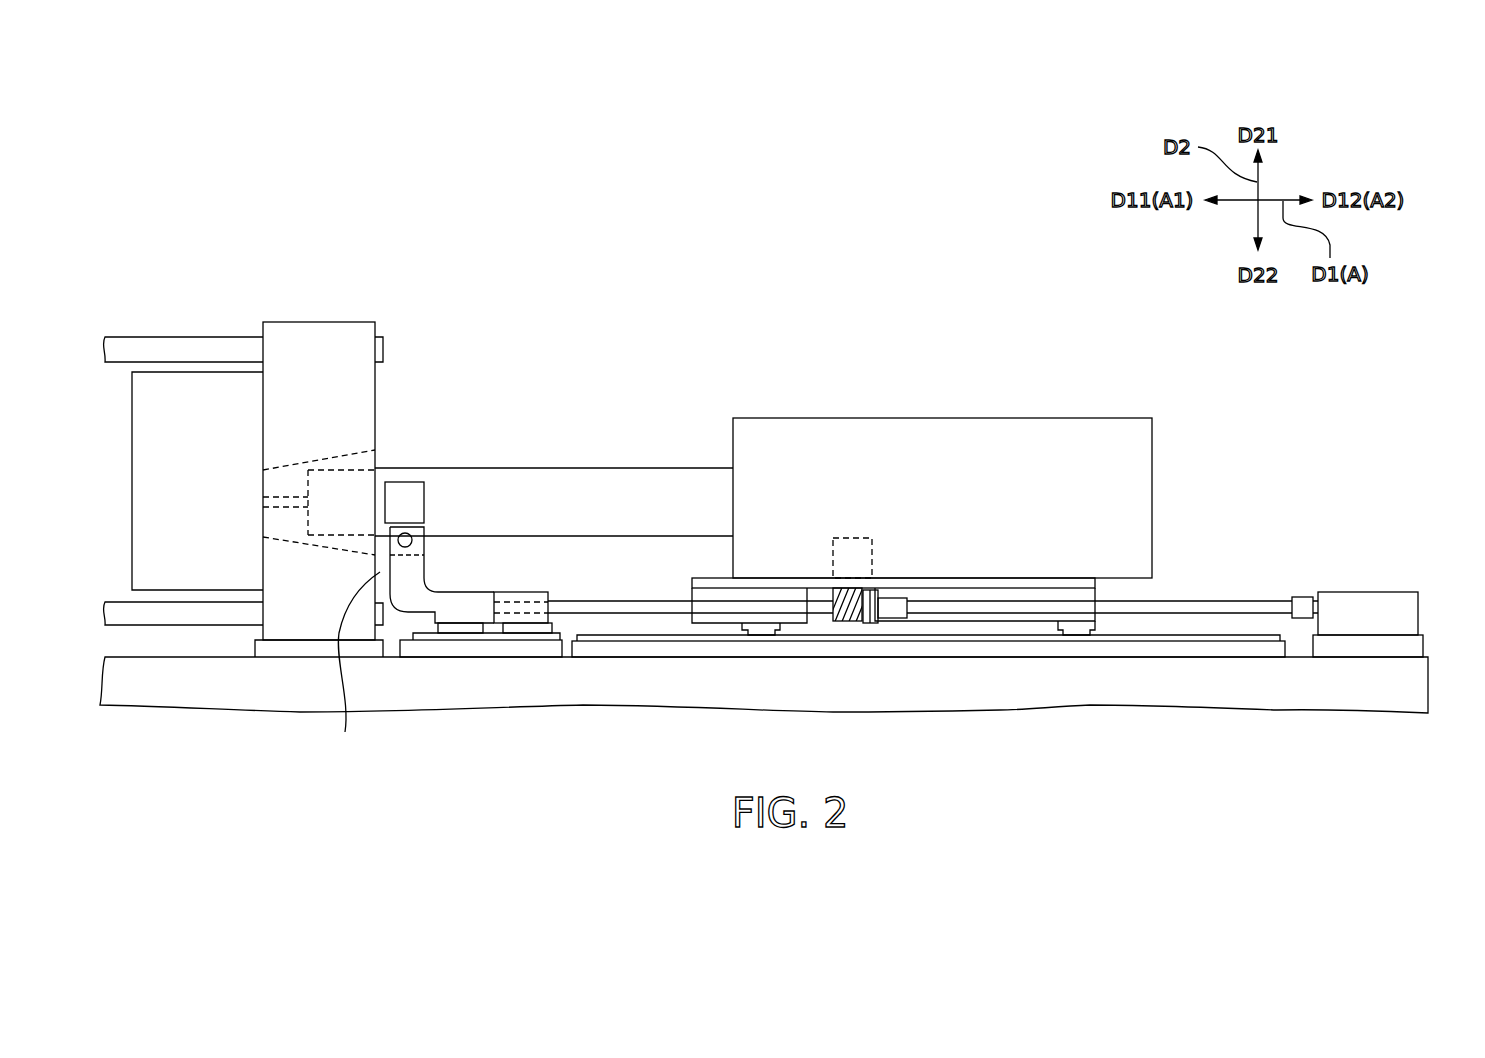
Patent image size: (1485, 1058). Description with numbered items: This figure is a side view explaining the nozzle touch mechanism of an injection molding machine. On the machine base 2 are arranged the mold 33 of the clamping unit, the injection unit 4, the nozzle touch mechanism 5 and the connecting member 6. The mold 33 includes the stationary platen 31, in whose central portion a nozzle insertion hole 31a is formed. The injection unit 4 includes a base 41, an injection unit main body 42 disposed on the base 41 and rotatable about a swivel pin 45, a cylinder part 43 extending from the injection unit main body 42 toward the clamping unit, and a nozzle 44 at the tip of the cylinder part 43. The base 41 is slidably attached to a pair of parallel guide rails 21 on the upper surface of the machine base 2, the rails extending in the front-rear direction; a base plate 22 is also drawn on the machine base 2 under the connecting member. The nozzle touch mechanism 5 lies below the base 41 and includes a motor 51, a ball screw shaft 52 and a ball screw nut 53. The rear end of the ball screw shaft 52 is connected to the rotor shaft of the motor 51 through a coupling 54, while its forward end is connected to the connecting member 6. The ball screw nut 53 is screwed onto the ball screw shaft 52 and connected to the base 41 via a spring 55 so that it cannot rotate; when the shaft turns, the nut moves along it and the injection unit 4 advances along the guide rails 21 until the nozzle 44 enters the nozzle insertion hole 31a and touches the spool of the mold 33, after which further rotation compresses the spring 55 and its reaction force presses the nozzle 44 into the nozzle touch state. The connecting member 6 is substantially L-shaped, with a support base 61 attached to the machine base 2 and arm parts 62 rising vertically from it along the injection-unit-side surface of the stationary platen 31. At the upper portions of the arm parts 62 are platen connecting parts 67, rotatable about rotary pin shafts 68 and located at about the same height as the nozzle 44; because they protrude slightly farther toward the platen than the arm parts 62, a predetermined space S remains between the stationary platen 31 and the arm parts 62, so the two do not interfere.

The machine base 2 is at (1428, 689).
The injection unit 4 is at (862, 342).
The nozzle touch mechanism 5 is at (1337, 498).
The connecting member 6 is at (487, 562).
The guide rails 21 is at (965, 648).
The base plate 22 is at (497, 641).
The stationary platen 31 is at (318, 322).
The nozzle insertion hole 31a is at (263, 552).
The mold 33 is at (203, 296).
The base 41 is at (998, 578).
The injection unit main body 42 is at (788, 418).
The cylinder part 43 is at (657, 468).
The nozzle 44 is at (292, 497).
The swivel pin 45 is at (853, 538).
The motor 51 is at (1380, 592).
The ball screw shaft 52 is at (1205, 602).
The ball screw nut 53 is at (880, 623).
The coupling 54 is at (1307, 598).
The spring 55 is at (849, 623).
The support base 61 is at (483, 595).
The arm parts 62 is at (413, 577).
The platen connecting parts 67 is at (414, 481).
The rotary pin shafts 68 is at (410, 536).
The space S is at (357, 668).